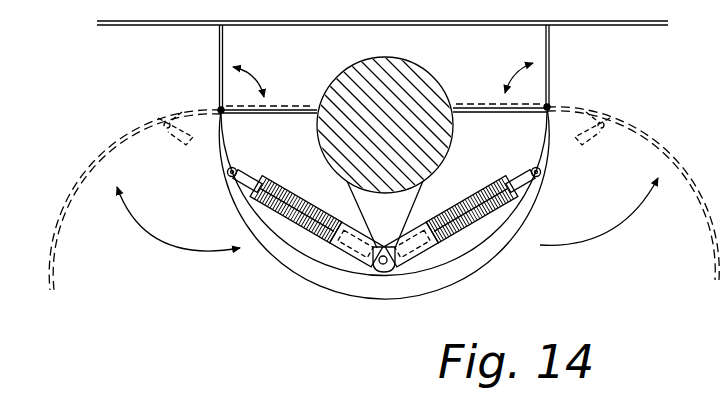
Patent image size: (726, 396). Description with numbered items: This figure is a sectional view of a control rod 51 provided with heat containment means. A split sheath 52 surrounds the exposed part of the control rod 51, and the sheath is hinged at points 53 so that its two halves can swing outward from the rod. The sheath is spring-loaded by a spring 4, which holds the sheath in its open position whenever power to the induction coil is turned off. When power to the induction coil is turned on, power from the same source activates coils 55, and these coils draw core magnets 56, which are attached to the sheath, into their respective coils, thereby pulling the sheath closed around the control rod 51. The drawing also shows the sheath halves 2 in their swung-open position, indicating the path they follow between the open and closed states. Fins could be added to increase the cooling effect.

The cover half in open position 2 is at (84, 178).
The spring 4 is at (224, 151).
The control rod 51 is at (410, 102).
The split sheath 52 is at (311, 291).
The hinge points 53 is at (221, 109).
The coils 55 is at (304, 211).
The core magnets 56 is at (244, 170).